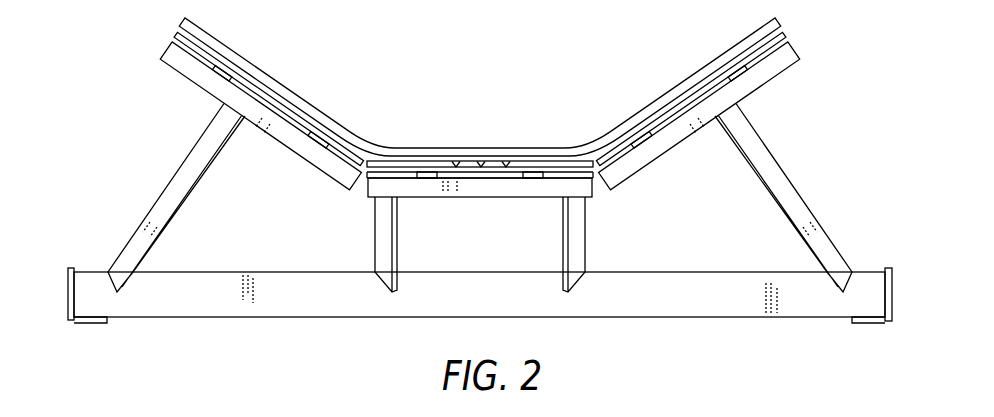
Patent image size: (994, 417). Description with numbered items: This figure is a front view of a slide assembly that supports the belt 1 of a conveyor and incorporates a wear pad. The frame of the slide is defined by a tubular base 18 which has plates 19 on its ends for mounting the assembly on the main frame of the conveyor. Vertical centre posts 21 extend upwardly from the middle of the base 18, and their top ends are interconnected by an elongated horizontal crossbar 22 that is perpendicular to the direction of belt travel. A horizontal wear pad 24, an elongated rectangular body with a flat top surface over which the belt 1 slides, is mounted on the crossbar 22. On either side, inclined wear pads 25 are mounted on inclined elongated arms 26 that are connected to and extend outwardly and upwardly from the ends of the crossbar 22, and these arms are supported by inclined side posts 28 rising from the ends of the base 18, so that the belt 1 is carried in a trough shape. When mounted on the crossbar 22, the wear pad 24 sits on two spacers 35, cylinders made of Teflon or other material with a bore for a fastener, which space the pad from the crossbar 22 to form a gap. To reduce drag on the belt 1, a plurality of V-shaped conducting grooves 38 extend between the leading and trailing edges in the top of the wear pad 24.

The belt 1 is at (307, 110).
The tubular base 18 is at (545, 302).
The plates 19 is at (86, 323).
The vertical centre posts 21 is at (385, 249).
The crossbar 22 is at (532, 192).
The horizontal wear pad 24 is at (475, 178).
The inclined wear pads 25 is at (280, 137).
The inclined elongated arms 26 is at (333, 170).
The inclined side posts 28 is at (170, 200).
The spacers 35 is at (425, 175).
The V-shaped conducting grooves 38 is at (455, 166).